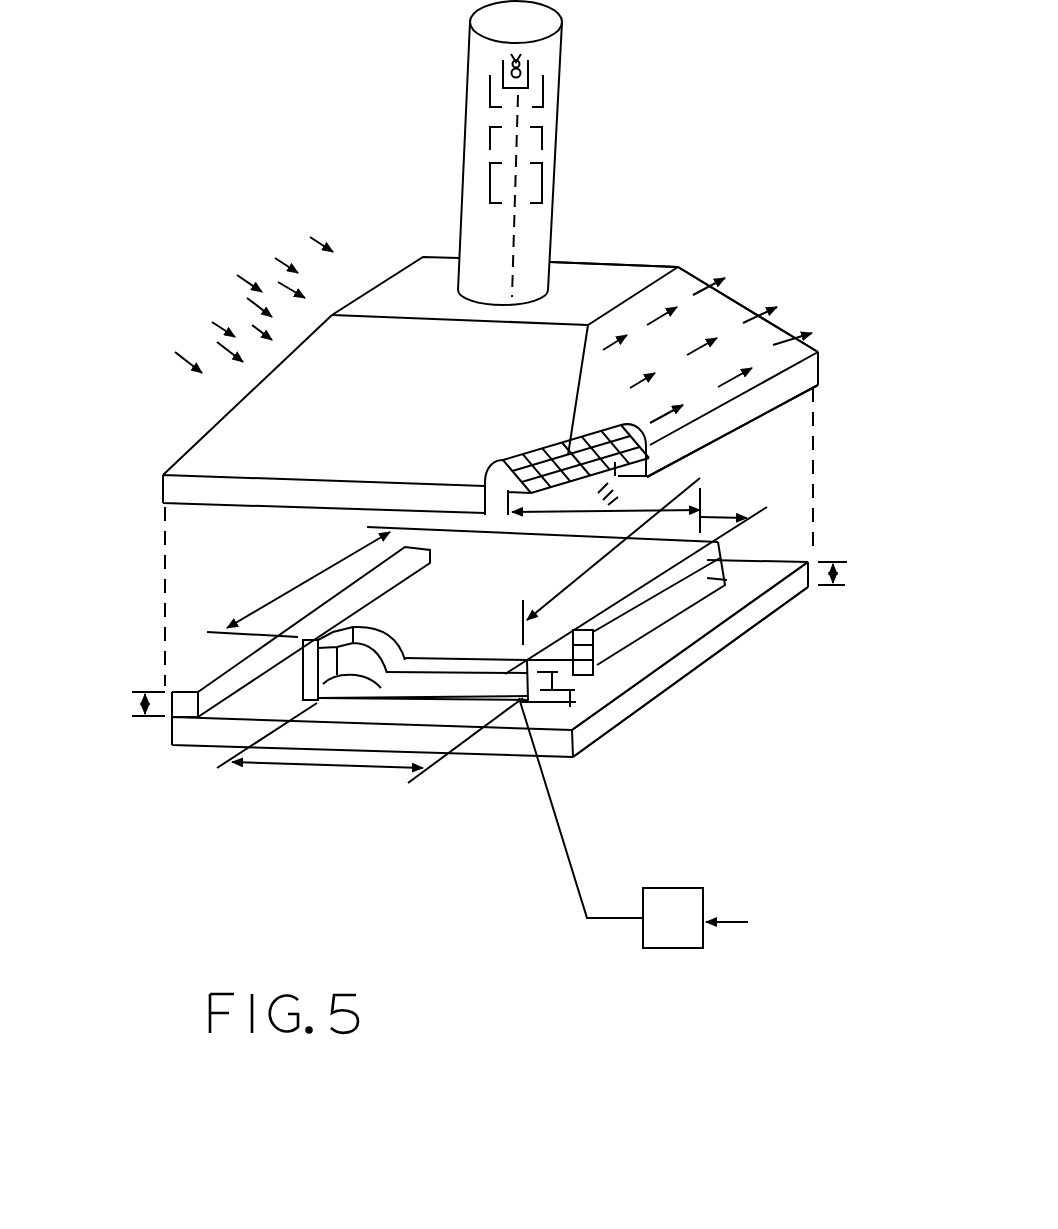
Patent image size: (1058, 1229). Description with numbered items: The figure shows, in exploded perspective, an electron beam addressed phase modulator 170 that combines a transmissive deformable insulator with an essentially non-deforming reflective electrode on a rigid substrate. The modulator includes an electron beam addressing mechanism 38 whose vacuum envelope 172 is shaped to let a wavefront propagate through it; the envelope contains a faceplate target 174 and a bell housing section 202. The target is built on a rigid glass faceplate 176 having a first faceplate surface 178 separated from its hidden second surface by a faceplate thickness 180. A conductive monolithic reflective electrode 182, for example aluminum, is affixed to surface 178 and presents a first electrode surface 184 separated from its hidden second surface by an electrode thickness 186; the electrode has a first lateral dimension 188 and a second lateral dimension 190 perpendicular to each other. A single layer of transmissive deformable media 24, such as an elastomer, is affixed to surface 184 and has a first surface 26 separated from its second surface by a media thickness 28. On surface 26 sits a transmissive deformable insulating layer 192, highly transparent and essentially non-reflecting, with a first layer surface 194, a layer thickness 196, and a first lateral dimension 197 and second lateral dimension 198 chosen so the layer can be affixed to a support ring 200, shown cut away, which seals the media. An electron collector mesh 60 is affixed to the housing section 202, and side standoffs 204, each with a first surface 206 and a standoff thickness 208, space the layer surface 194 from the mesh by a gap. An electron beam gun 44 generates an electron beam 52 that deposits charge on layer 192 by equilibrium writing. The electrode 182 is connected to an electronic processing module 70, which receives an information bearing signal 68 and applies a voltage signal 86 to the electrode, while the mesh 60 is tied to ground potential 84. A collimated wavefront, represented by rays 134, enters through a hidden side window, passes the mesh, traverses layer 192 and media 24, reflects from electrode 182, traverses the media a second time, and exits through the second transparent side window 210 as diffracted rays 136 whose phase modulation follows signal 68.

The electron beam gun 44 is at (570, 97).
The electron beam 52 is at (520, 238).
The electron beam addressing mechanism 38 is at (198, 427).
The rays 134 is at (188, 358).
The diffracted rays 136 is at (650, 325).
The electron collector mesh 60 is at (500, 477).
The bell housing section 202 is at (617, 256).
The electron beam addressed phase modulator 170 is at (652, 257).
The vacuum envelope 172 is at (740, 302).
The second transparent side window 210 is at (778, 342).
The ground potential 84 is at (623, 497).
The second lateral dimension 198 is at (700, 478).
The first layer surface 194 is at (717, 548).
The transmissive deformable insulating layer 192 is at (722, 551).
The faceplate thickness 180 is at (840, 575).
The support ring 200 is at (708, 578).
The faceplate target 174 is at (773, 625).
The faceplate 176 is at (727, 630).
The first faceplate surface 178 is at (690, 633).
The side standoffs 204 is at (183, 705).
The first lateral dimension 197 is at (328, 560).
The first lateral dimension 188 is at (580, 577).
The first surface 206 is at (197, 688).
The standoff thickness 208 is at (137, 693).
The first surface 26 is at (377, 652).
The transmissive deformable media 24 is at (433, 680).
The first electrode surface 184 is at (340, 703).
The conductive monolithic reflective electrode 182 is at (358, 698).
The second lateral dimension 190 is at (343, 770).
The layer thickness 196 is at (595, 648).
The media thickness 28 is at (572, 672).
The electrode thickness 186 is at (583, 702).
The voltage signal 86 is at (572, 897).
The electronic processing module 70 is at (668, 948).
The information bearing signal 68 is at (733, 925).